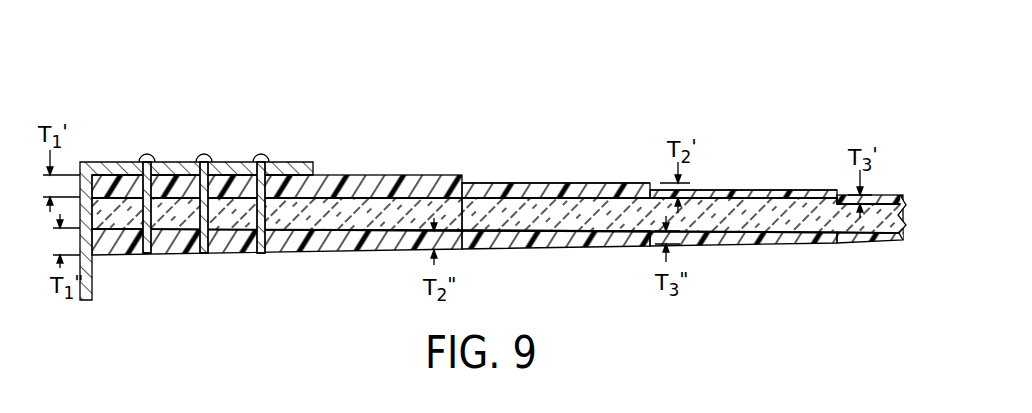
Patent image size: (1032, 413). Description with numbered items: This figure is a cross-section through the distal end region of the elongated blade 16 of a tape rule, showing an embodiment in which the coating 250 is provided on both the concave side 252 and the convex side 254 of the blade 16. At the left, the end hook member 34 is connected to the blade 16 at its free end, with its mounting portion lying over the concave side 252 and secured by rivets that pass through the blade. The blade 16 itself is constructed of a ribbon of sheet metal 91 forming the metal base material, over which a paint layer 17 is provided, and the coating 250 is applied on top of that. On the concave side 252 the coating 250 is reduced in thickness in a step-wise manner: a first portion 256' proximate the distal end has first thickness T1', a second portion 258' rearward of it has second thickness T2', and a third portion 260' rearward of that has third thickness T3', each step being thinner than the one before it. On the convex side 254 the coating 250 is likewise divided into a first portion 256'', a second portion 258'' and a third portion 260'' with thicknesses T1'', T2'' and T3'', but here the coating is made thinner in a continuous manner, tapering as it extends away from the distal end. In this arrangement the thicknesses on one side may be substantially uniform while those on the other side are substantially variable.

The elongated blade 16 is at (547, 227).
The paint layer 17 is at (813, 198).
The end hook member 34 is at (80, 195).
The sheet metal ribbon 91 is at (321, 222).
The coating 250 is at (347, 175).
The concave side 252 is at (885, 196).
The convex side 254 is at (888, 239).
The first portion of the coating on the concave side 256' is at (277, 157).
The first portion of the coating on the convex side 256'' is at (277, 272).
The second portion of the coating on the concave side 258' is at (556, 160).
The second portion of the coating on the convex side 258'' is at (556, 274).
The third portion of the coating on the concave side 260' is at (743, 158).
The third portion of the coating on the convex side 260'' is at (743, 280).